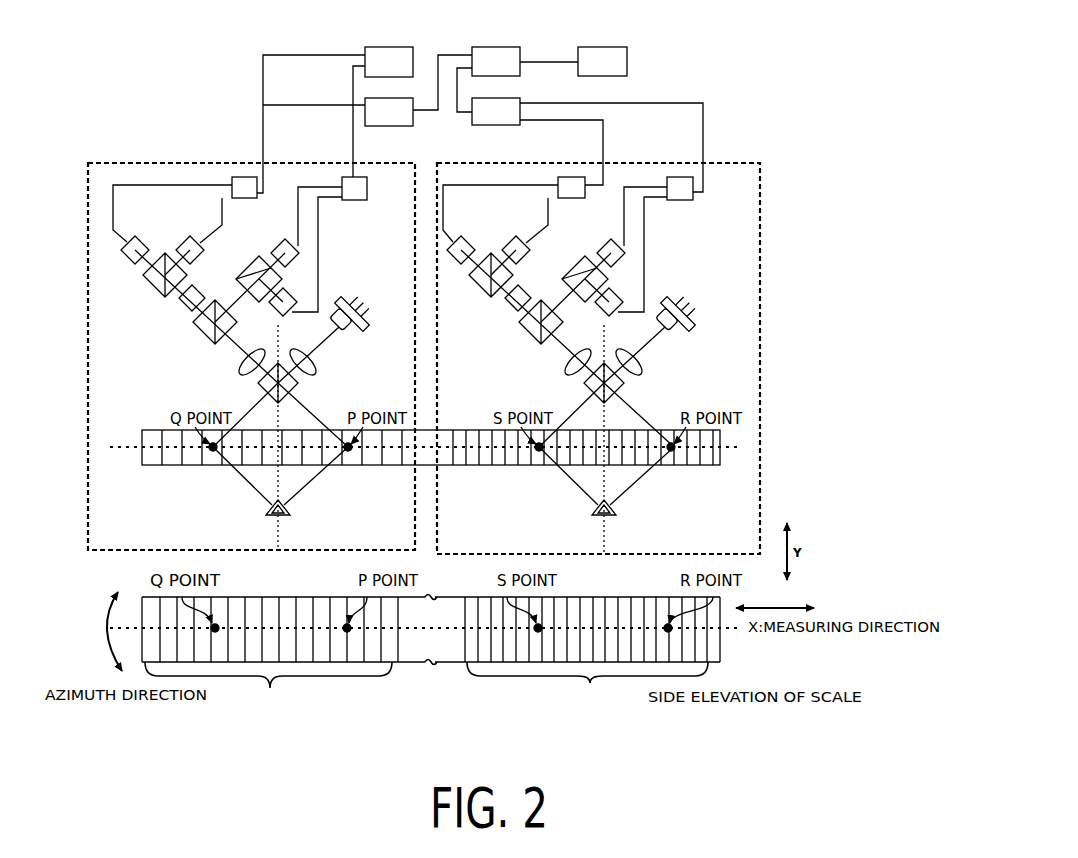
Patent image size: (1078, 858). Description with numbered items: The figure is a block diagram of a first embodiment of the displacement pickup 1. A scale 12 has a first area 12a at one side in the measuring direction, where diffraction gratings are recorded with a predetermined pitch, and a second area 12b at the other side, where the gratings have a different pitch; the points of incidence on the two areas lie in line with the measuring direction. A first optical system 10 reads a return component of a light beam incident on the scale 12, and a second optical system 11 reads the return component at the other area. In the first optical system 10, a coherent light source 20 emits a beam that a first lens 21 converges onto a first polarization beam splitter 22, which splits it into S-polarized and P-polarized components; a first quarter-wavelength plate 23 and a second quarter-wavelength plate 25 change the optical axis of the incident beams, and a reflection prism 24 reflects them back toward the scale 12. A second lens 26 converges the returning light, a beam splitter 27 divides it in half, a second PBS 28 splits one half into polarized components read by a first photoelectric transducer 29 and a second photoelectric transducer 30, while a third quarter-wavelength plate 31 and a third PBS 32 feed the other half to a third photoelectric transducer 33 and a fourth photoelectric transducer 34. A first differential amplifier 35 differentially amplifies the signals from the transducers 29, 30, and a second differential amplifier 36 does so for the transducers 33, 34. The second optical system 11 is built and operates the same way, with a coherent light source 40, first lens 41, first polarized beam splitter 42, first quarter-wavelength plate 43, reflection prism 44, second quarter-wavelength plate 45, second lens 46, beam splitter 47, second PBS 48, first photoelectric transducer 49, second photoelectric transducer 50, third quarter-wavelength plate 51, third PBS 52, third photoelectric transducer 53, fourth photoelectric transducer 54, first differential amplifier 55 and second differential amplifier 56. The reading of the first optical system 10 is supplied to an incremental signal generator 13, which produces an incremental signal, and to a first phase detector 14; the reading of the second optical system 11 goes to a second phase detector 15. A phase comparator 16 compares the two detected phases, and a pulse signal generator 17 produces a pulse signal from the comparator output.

The displacement pickup 1 is at (676, 23).
The first optical system 10 is at (106, 162).
The second optical system 11 is at (726, 162).
The scale 12 is at (428, 547).
The first area 12a is at (268, 687).
The second area 12b is at (587, 687).
The incremental signal generator 13 is at (335, 120).
The first phase detector 14 is at (367, 90).
The second phase detector 15 is at (587, 145).
The phase comparator 16 is at (517, 79).
The pulse signal generator 17 is at (602, 61).
The coherent light source 20 is at (347, 335).
The first lens 21 is at (313, 364).
The first polarization beam splitter 22 is at (265, 388).
The first quarter-wavelength plate 23 is at (290, 505).
The reflection prism 24 is at (280, 517).
The second quarter-wavelength plate 25 is at (263, 505).
The second lens 26 is at (240, 366).
The beam splitter 27 is at (203, 326).
The second PBS 28 is at (254, 266).
The first photoelectric transducer 29 is at (283, 302).
The second photoelectric transducer 30 is at (285, 253).
The third quarter-wavelength plate 31 is at (182, 306).
The third PBS 32 is at (148, 277).
The third photoelectric transducer 33 is at (190, 250).
The fourth photoelectric transducer 34 is at (135, 250).
The first differential amplifier 35 is at (329, 244).
The second differential amplifier 36 is at (185, 210).
The coherent light source 40 is at (680, 319).
The first lens 41 is at (646, 362).
The first polarized beam splitter 42 is at (586, 384).
The first quarter-wavelength plate 43 is at (637, 495).
The reflection prism 44 is at (619, 521).
The second quarter-wavelength plate 45 is at (567, 495).
The second lens 46 is at (560, 362).
The beam splitter 47 is at (521, 322).
The second PBS 48 is at (580, 266).
The first photoelectric transducer 49 is at (609, 302).
The second photoelectric transducer 50 is at (611, 253).
The third quarter-wavelength plate 51 is at (495, 304).
The third PBS 52 is at (471, 275).
The third photoelectric transducer 53 is at (516, 250).
The fourth photoelectric transducer 54 is at (461, 250).
The first differential amplifier 55 is at (655, 244).
The second differential amplifier 56 is at (514, 210).